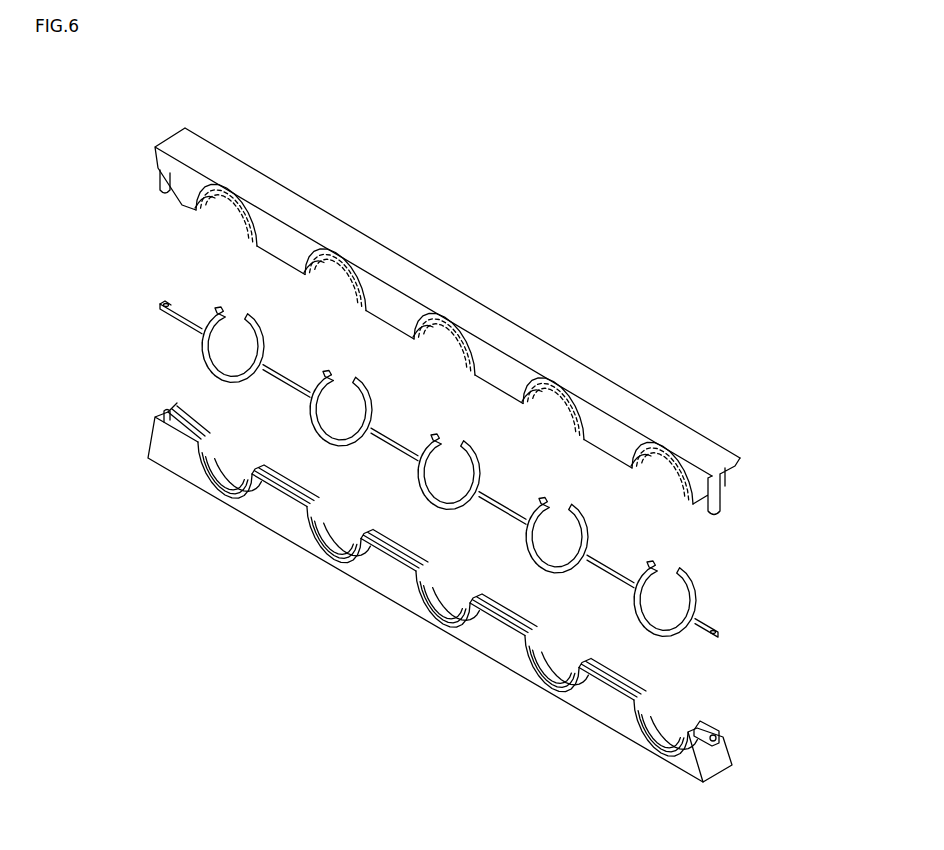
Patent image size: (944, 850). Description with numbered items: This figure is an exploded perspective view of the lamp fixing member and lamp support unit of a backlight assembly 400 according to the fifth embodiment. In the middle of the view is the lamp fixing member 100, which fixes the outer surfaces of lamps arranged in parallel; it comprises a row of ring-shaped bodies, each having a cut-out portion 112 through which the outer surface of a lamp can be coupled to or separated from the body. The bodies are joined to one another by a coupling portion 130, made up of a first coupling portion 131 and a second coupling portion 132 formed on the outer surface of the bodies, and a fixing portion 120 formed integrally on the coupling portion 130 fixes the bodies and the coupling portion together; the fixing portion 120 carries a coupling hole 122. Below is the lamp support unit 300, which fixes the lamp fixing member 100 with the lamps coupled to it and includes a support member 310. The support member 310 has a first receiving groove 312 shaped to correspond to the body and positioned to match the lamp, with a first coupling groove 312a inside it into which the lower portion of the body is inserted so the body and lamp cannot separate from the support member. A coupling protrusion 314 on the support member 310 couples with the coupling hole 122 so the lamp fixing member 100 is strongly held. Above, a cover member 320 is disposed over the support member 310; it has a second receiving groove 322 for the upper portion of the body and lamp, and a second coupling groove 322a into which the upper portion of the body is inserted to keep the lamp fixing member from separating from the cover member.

The backlight assembly 400 is at (548, 223).
The lamp support unit 300 is at (781, 563).
The support member 310 is at (717, 722).
The first receiving groove 312 is at (220, 498).
The first coupling groove 312a is at (217, 470).
The coupling protrusion 314 is at (167, 410).
The cover member 320 is at (717, 520).
The second receiving groove 322 is at (216, 188).
The second coupling groove 322a is at (243, 200).
The lamp fixing member 100 is at (319, 367).
The cut-out portion 112 is at (338, 357).
The fixing portion 120 is at (158, 294).
The coupling hole 122 is at (165, 304).
The coupling portion 130 is at (500, 424).
The first coupling portion 131 is at (400, 425).
The second coupling portion 132 is at (492, 483).